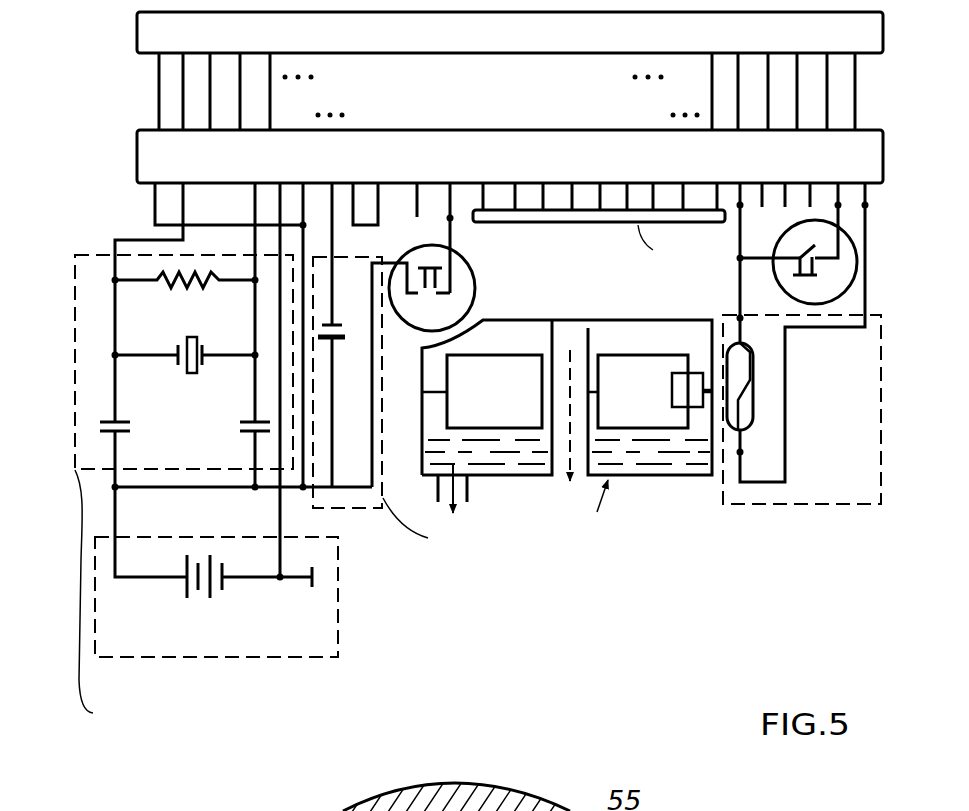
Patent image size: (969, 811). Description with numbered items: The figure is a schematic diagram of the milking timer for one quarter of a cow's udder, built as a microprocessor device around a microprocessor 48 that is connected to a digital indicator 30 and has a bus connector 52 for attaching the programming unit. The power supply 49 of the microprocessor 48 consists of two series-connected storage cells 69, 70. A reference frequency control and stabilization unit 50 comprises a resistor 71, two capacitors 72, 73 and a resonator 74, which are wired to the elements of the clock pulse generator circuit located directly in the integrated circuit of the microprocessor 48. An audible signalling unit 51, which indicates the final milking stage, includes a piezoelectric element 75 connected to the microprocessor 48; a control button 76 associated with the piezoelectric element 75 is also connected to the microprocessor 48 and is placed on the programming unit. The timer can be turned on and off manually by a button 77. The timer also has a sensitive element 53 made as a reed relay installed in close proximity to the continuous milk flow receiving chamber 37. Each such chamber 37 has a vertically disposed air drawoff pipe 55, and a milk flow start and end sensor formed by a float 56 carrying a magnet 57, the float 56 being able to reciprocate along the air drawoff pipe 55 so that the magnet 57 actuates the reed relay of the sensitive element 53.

The digital indicator 30 is at (510, 32).
The microprocessor 48 is at (510, 156).
The bus connector 52 is at (592, 222).
The reference frequency control and stabilization unit 50 is at (92, 252).
The resistor 71 is at (182, 288).
The resonator 74 is at (200, 338).
The capacitor 72 is at (120, 420).
The capacitor 73 is at (248, 420).
The piezoelectric element 75 is at (338, 338).
The control button 76 is at (465, 270).
The audible signalling unit 51 is at (377, 517).
The power supply 49 is at (342, 630).
The storage cell 69 is at (187, 590).
The storage cell 70 is at (222, 590).
The float 56 is at (503, 363).
The magnet 57 is at (673, 388).
The air drawoff pipe 55 is at (572, 335).
The continuous milk flow receiving chamber 37 is at (600, 519).
The sensitive element 53 is at (853, 508).
The button 77 is at (845, 277).